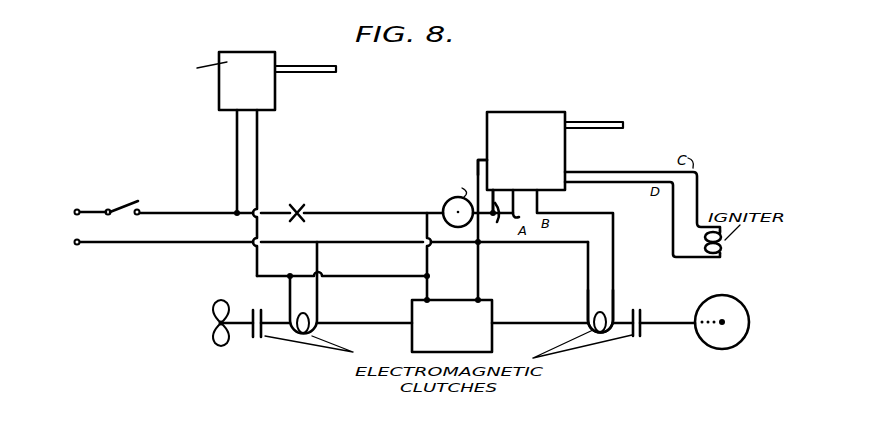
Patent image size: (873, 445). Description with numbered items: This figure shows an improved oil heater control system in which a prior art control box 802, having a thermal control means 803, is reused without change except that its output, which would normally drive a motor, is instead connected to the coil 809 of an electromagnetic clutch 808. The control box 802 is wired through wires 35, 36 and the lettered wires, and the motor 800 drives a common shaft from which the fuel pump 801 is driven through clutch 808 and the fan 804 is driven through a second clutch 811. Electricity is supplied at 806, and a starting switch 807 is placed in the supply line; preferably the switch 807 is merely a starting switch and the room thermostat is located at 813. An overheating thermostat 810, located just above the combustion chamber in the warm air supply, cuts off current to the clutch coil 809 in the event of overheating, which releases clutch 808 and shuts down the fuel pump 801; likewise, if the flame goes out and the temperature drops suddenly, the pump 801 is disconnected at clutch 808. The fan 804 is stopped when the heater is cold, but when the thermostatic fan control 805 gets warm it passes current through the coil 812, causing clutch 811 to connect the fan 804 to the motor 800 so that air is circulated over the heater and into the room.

The motor 800 is at (490, 302).
The fuel pump 801 is at (727, 335).
The control box 802 is at (565, 152).
The thermal control means 803 is at (625, 125).
The fan 804 is at (213, 312).
The fan control 805 is at (228, 87).
The electricity supply 806 is at (88, 222).
The starting switch 807 is at (140, 202).
The electromagnetic clutch 808 is at (648, 332).
The coil 809 is at (585, 312).
The overheating thermostat 810 is at (441, 208).
The clutch 811 is at (256, 340).
The coil 812 is at (316, 318).
The room thermostat 813 is at (303, 216).
The wire 35 is at (496, 215).
The wire 36 is at (478, 160).